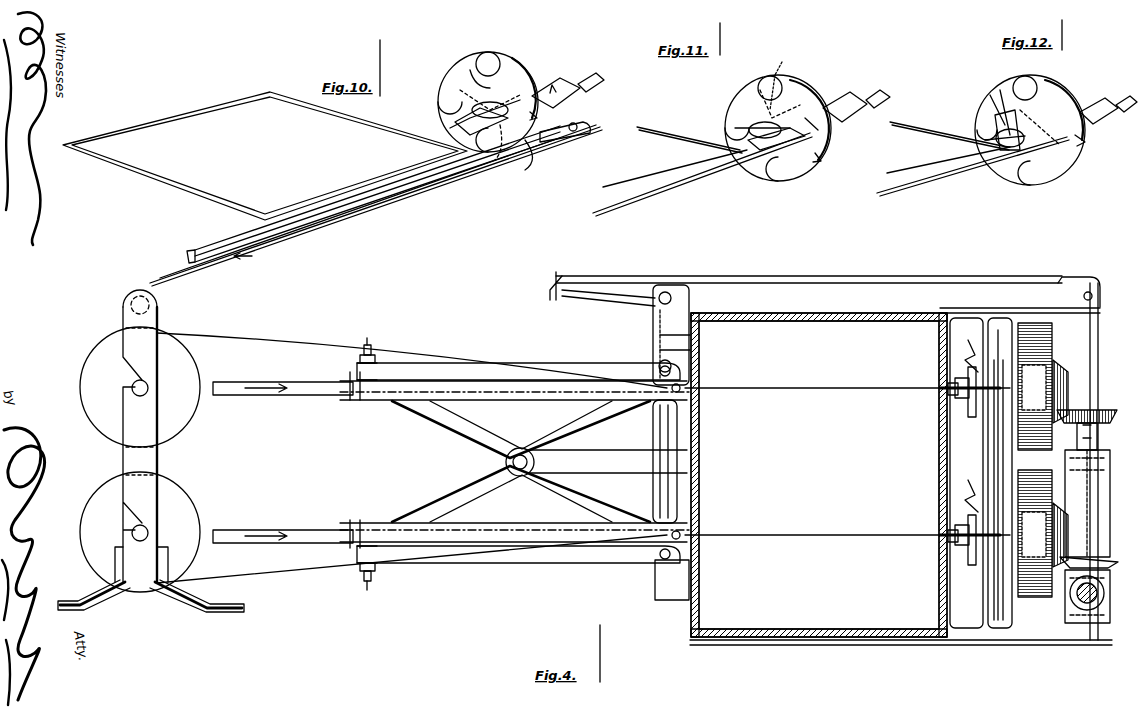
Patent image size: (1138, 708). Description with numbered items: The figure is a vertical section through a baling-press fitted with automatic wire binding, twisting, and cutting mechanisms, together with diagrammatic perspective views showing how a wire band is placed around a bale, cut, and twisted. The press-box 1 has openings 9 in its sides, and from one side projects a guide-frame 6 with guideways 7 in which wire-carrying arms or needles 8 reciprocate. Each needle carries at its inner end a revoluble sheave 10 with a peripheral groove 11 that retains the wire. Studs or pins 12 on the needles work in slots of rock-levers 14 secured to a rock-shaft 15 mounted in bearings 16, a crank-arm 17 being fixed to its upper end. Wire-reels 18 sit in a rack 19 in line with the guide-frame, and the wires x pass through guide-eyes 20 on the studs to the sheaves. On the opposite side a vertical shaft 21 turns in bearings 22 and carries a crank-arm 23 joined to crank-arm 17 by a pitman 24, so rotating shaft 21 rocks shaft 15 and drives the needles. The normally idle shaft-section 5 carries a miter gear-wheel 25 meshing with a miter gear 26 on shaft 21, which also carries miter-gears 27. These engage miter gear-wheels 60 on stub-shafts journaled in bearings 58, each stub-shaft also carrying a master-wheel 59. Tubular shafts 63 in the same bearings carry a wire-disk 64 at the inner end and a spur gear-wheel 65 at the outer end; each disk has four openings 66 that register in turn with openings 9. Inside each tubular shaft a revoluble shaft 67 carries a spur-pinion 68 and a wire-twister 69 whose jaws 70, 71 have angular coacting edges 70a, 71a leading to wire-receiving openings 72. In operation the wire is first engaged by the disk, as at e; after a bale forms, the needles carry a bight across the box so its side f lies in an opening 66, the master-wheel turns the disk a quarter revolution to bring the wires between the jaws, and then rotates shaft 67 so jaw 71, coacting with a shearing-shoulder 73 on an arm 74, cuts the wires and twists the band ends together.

In FIG. 4, the press-box 1 is at (819, 475).
In FIG. 4, the shaft-section 5 is at (1105, 590).
In FIG. 4, the guide-frame 6 is at (476, 432).
In FIG. 4, the guideways 7 is at (355, 402).
In FIG. 10, the wire-carrying arms or needles 8 is at (380, 205).
In FIG. 4, the wire-carrying arms or needles 8 is at (272, 400).
In FIG. 10, the openings 9 is at (440, 192).
In FIG. 11, the openings 9 is at (712, 185).
In FIG. 12, the openings 9 is at (955, 175).
In FIG. 4, the openings 9 is at (702, 384).
In FIG. 10, the wire-carrying revoluble sheave 10 is at (585, 140).
In FIG. 4, the wire-carrying revoluble sheave 10 is at (660, 415).
In FIG. 10, the peripheral groove 11 is at (600, 126).
In FIG. 4, the vertical studs or pins 12 is at (380, 343).
In FIG. 4, the rock-levers 14 is at (590, 367).
In FIG. 4, the rock-shaft 15 is at (690, 312).
In FIG. 4, the bearings 16 is at (690, 345).
In FIG. 4, the crank-arm 17 is at (605, 300).
In FIG. 4, the wire-reels 18 is at (193, 370).
In FIG. 4, the rack 19 is at (145, 453).
In FIG. 4, the guide-eyes 20 is at (368, 338).
In FIG. 4, the vertical shaft 21 is at (1100, 335).
In FIG. 4, the bearings 22 is at (1100, 305).
In FIG. 4, the crank-arm 23 is at (1075, 275).
In FIG. 4, the pitman or rod 24 is at (860, 276).
In FIG. 4, the miter gear-wheel 25 is at (1065, 605).
In FIG. 4, the miter gear 26 is at (1057, 640).
In FIG. 4, the miter-gears 27 is at (1100, 408).
In FIG. 4, the bearings 58 is at (1000, 473).
In FIG. 4, the master-wheel 59 is at (1030, 322).
In FIG. 4, the miter gear-wheel 60 is at (1060, 365).
In FIG. 10, the tubular shaft 63 is at (580, 80).
In FIG. 11, the tubular shaft 63 is at (852, 88).
In FIG. 12, the tubular shaft 63 is at (1090, 103).
In FIG. 4, the tubular shaft 63 is at (1000, 380).
In FIG. 10, the wire-disk 64 is at (500, 70).
In FIG. 11, the wire-disk 64 is at (745, 78).
In FIG. 12, the wire-disk 64 is at (1010, 175).
In FIG. 4, the wire-disk 64 is at (972, 417).
In FIG. 4, the spur gear-wheel 65 is at (1034, 380).
In FIG. 10, the openings 66 is at (514, 63).
In FIG. 11, the openings 66 is at (819, 126).
In FIG. 12, the openings 66 is at (1030, 78).
In FIG. 10, the revoluble shaft 67 is at (604, 84).
In FIG. 11, the revoluble shaft 67 is at (870, 88).
In FIG. 12, the revoluble shaft 67 is at (1126, 92).
In FIG. 4, the spur-pinion 68 is at (1034, 528).
In FIG. 10, the wire-twister 69 is at (485, 114).
In FIG. 11, the wire-twister 69 is at (740, 130).
In FIG. 12, the wire-twister 69 is at (1030, 150).
In FIG. 4, the wire-twister 69 is at (948, 395).
In FIG. 10, the jaw 70 is at (492, 93).
In FIG. 11, the jaw 70 is at (810, 96).
In FIG. 12, the jaw 70 is at (985, 97).
In FIG. 11, the angularly-disposed coacting edge 70a is at (836, 130).
In FIG. 12, the angularly-disposed coacting edge 70a is at (1005, 90).
In FIG. 10, the jaw 71 is at (500, 165).
In FIG. 11, the jaw 71 is at (768, 160).
In FIG. 12, the jaw 71 is at (1045, 120).
In FIG. 10, the angularly-disposed coacting edge 71a is at (532, 160).
In FIG. 10, the wire-receiving openings 72 is at (455, 135).
In FIG. 12, the wire-receiving openings 72 is at (995, 112).
In FIG. 4, the shearing-shoulder 73 is at (950, 376).
In FIG. 4, the arm 74 is at (966, 473).
In FIG. 10, the wire e is at (465, 71).
In FIG. 11, the wire e is at (730, 88).
In FIG. 12, the wire e is at (939, 125).
In FIG. 10, the side of the wire bight f is at (404, 178).
In FIG. 11, the side of the wire bight f is at (662, 168).
In FIG. 12, the side of the wire bight f is at (928, 172).
In FIG. 4, the wires x is at (450, 360).